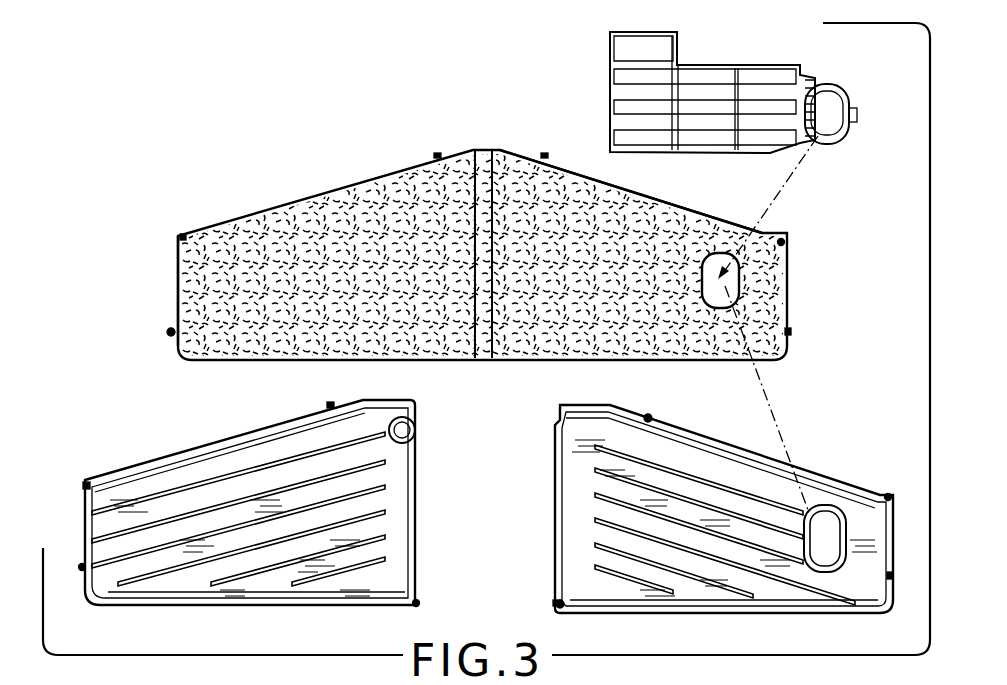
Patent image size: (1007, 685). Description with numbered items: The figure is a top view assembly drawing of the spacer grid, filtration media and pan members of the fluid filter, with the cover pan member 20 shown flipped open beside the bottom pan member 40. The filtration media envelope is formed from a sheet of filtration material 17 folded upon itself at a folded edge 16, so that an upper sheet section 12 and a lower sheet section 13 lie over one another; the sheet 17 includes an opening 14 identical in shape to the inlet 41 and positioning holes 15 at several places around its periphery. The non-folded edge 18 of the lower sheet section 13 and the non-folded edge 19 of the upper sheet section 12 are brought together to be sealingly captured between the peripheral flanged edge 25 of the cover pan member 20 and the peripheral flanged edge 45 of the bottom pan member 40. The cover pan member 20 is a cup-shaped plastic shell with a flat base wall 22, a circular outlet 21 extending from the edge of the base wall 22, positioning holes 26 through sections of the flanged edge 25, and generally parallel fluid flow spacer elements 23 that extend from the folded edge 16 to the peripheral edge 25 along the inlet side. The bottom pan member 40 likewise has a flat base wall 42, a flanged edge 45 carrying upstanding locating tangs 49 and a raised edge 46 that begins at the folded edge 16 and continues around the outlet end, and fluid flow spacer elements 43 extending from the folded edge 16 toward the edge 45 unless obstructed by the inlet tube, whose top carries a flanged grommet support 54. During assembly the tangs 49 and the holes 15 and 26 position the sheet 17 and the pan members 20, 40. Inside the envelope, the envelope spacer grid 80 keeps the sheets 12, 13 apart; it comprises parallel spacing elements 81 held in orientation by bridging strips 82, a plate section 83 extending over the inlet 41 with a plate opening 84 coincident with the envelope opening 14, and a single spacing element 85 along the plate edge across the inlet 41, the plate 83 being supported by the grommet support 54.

The upper sheet section 12 is at (262, 242).
The lower sheet section 13 is at (558, 195).
The envelope opening 14 is at (740, 283).
The positioning holes 15 is at (180, 239).
The folded edge 16 is at (482, 150).
The sheet of filtration material 17 is at (319, 186).
The non-folded edge of lower sheet section 18 is at (688, 214).
The non-folded edge of upper sheet section 19 is at (178, 300).
The cover pan member 20 is at (141, 460).
The outlet 21 is at (415, 430).
The base wall 22 is at (308, 440).
The fluid flow spacer elements 23 is at (250, 470).
The peripheral flanged edge 25 is at (215, 607).
The positioning holes 26 is at (85, 485).
The bottom pan member 40 is at (542, 525).
The inlet 41 is at (845, 525).
The base wall 42 is at (622, 415).
The fluid flow spacer elements 43 is at (705, 465).
The peripheral flanged edge 45 is at (720, 612).
The raised edge 46 is at (556, 603).
The locating tangs 49 is at (652, 416).
The flanged grommet support 54 is at (826, 512).
The envelope spacer grid 80 is at (600, 74).
The spacing elements 81 is at (698, 63).
The bridging strips 82 is at (738, 84).
The plate section 83 is at (820, 98).
The plate opening 84 is at (840, 105).
The single spacing element 85 is at (853, 123).